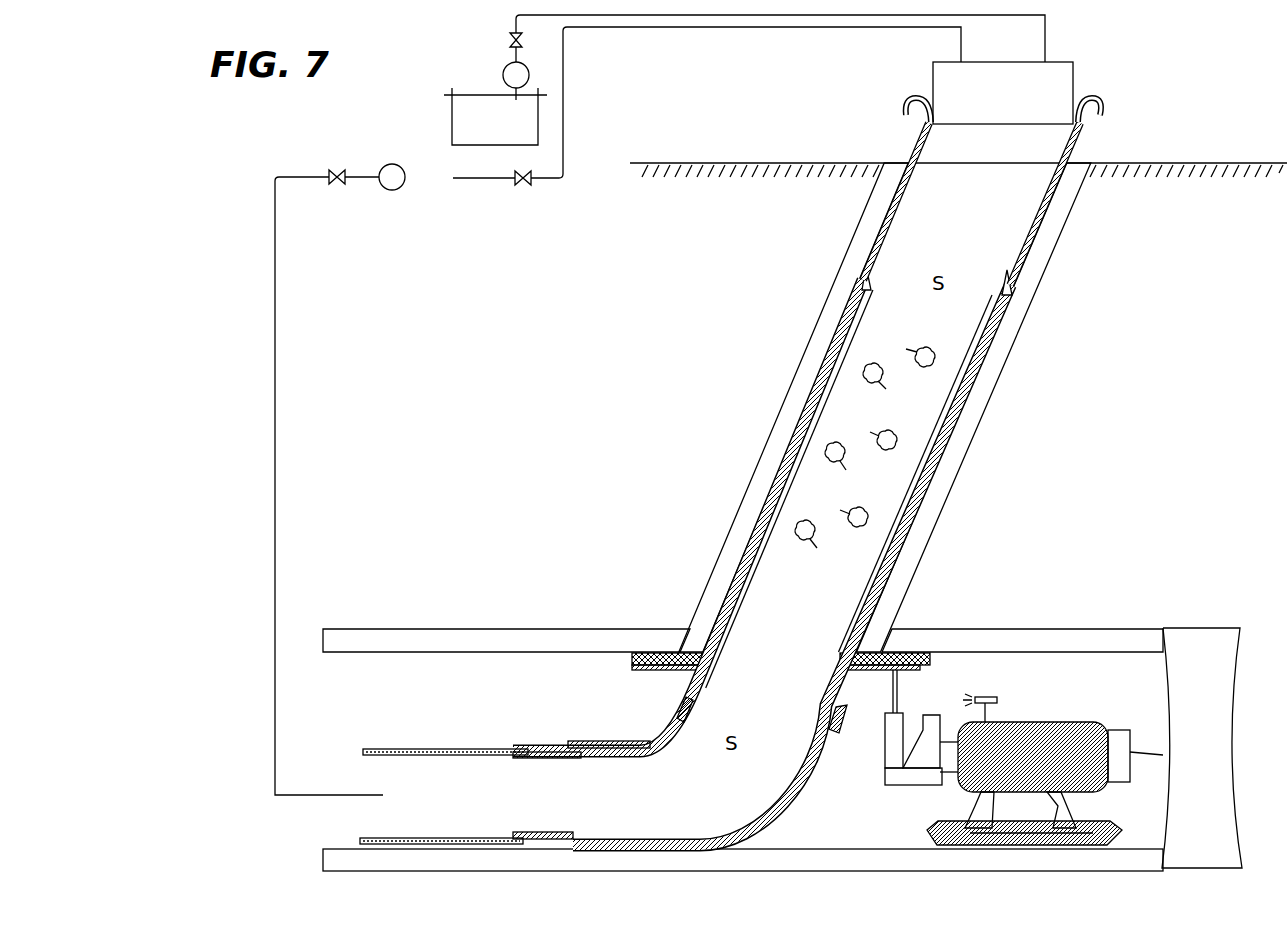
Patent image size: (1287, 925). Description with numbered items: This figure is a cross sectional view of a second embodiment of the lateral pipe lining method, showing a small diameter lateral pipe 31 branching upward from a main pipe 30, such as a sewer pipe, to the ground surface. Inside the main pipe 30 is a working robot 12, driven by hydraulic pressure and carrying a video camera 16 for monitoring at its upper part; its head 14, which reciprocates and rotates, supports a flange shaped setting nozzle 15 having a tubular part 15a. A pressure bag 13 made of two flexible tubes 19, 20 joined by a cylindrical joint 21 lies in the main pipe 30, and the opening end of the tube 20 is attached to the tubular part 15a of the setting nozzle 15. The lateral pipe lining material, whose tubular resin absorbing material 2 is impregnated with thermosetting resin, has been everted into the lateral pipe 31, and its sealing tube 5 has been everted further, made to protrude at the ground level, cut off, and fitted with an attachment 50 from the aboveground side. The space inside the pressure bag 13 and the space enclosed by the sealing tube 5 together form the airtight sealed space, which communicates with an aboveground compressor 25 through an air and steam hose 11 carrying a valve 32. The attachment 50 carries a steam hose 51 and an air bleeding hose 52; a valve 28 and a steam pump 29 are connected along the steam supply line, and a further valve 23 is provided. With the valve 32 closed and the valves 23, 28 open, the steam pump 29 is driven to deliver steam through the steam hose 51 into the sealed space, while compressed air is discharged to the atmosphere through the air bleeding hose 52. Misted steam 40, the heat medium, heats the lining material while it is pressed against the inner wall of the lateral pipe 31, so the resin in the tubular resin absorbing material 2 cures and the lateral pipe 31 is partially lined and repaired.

The tubular resin absorbing material 2 is at (972, 380).
The sealing tube 5 is at (1005, 258).
The air and steam hose 11 is at (285, 549).
The working robot 12 is at (1086, 727).
The pressure bag 13 is at (505, 733).
The head 14 is at (893, 787).
The setting nozzle 15 is at (867, 670).
The tubular part 15a is at (682, 703).
The video camera 16 is at (1003, 697).
The flexible tube 19 is at (425, 749).
The tube 20 is at (594, 742).
The cylindrical joint 21 is at (560, 833).
The valve 23 is at (523, 187).
The compressor 25 is at (400, 190).
The valve 28 is at (508, 42).
The steam pump 29 is at (500, 78).
The main pipe 30 is at (1203, 637).
The lateral pipe 31 is at (1007, 347).
The valve 32 is at (334, 187).
The misted steam 40 is at (875, 362).
The attachment 50 is at (1073, 84).
The steam hose 51 is at (1047, 33).
The air bleeding hose 52 is at (800, 30).